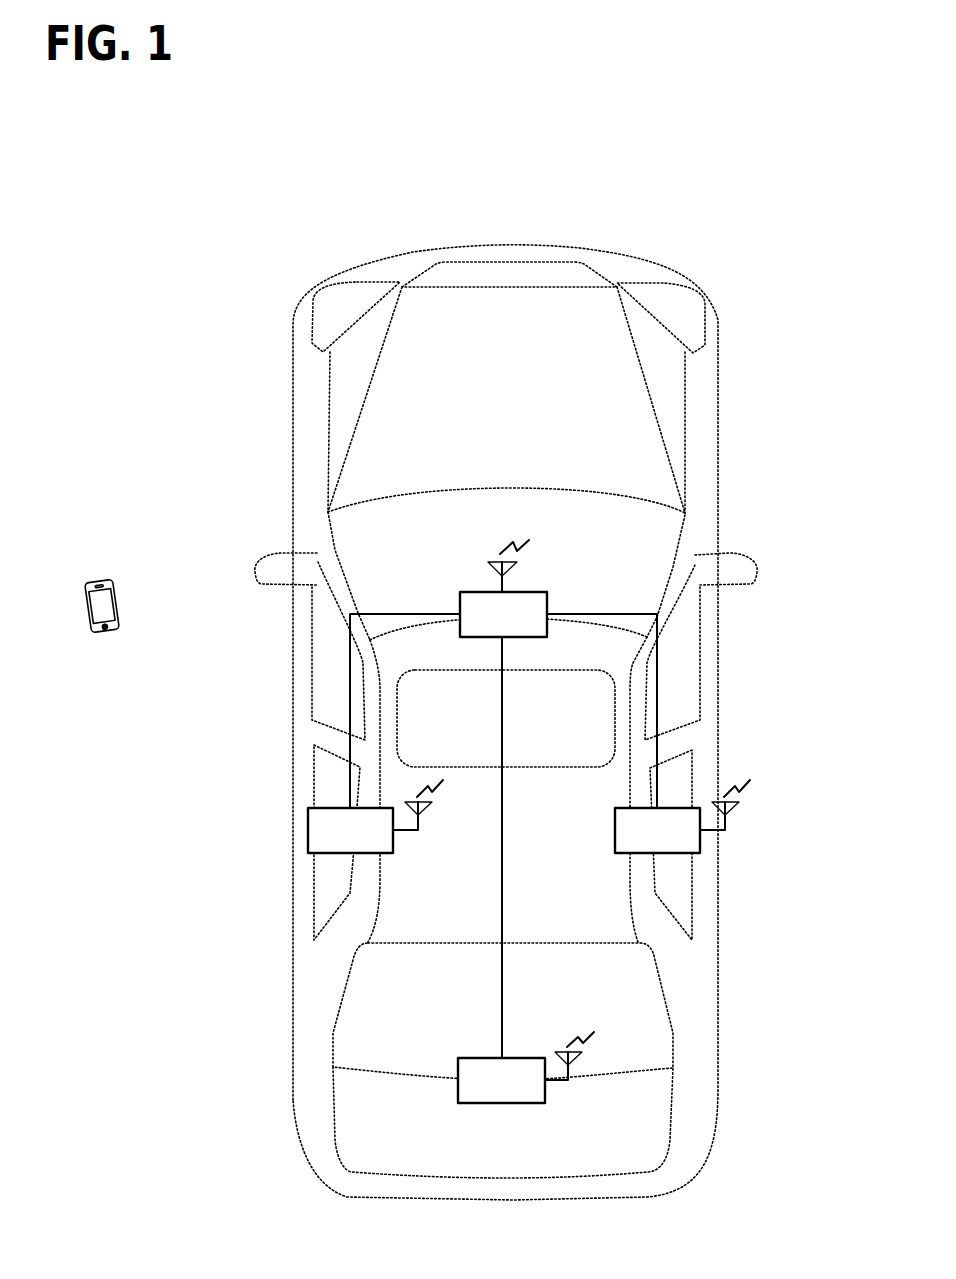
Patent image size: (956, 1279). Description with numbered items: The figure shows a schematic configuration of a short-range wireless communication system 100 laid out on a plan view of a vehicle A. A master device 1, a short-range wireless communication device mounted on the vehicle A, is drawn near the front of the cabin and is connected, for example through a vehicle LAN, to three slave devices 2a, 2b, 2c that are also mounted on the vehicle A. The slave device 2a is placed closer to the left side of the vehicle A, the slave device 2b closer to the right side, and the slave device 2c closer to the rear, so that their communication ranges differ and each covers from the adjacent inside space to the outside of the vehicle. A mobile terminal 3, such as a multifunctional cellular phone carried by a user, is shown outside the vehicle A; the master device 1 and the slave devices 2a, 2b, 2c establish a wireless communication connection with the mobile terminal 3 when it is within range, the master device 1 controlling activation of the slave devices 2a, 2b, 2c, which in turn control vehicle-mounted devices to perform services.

The short-range wireless communication system 100 is at (551, 688).
The vehicle A is at (720, 336).
The master device 1 is at (547, 600).
The slave device 2a is at (308, 830).
The slave device 2b is at (615, 830).
The slave device 2c is at (458, 1070).
The mobile terminal 3 is at (119, 594).